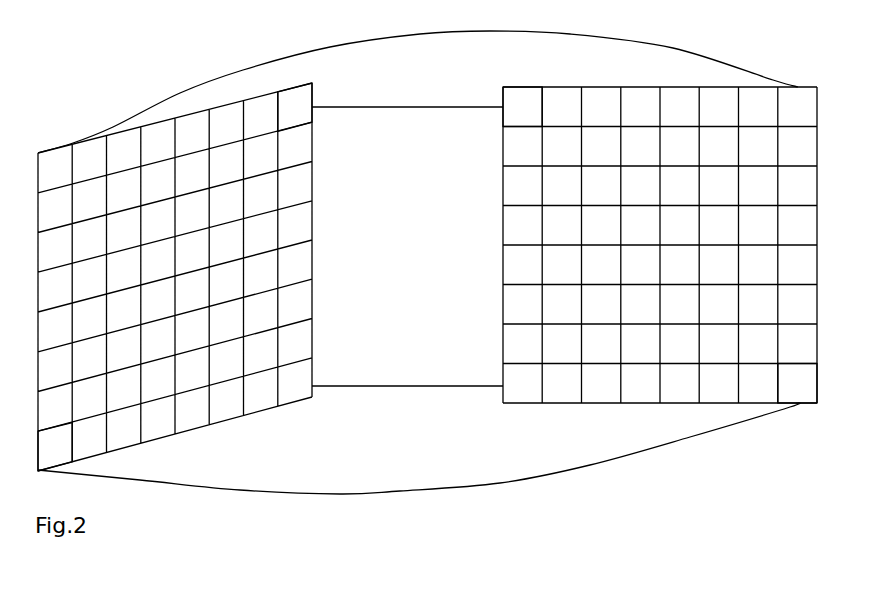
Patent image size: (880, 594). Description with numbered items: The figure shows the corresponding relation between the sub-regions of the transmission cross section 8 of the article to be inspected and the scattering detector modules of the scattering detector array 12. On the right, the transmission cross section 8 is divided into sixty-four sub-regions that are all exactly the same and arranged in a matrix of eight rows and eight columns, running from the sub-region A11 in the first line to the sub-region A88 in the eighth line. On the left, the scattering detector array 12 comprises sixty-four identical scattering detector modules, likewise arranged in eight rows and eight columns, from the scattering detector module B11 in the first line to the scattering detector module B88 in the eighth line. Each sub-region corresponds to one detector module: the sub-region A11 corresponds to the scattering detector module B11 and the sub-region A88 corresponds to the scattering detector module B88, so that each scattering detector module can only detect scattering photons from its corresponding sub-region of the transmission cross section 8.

The transmission cross section 8 is at (659, 278).
The scattering detector array 12 is at (184, 281).
The sub-region A11 is at (522, 107).
The sub-region A88 is at (797, 384).
The scattering detector module B11 is at (295, 107).
The scattering detector module B88 is at (55, 447).